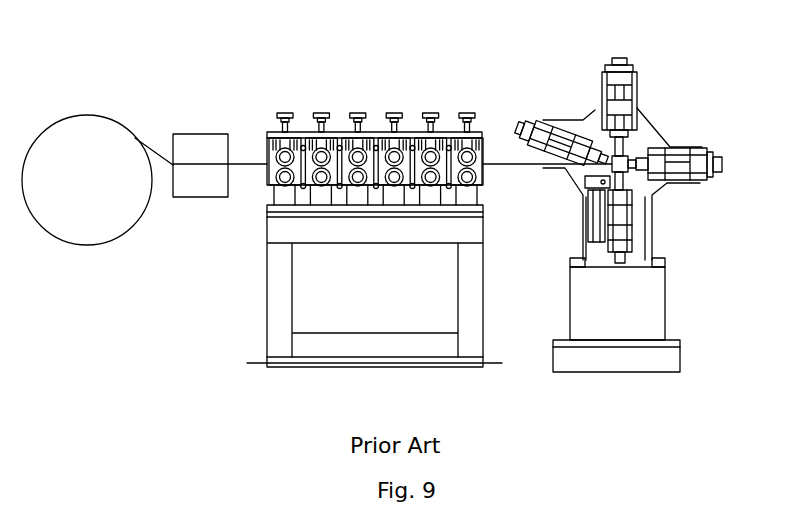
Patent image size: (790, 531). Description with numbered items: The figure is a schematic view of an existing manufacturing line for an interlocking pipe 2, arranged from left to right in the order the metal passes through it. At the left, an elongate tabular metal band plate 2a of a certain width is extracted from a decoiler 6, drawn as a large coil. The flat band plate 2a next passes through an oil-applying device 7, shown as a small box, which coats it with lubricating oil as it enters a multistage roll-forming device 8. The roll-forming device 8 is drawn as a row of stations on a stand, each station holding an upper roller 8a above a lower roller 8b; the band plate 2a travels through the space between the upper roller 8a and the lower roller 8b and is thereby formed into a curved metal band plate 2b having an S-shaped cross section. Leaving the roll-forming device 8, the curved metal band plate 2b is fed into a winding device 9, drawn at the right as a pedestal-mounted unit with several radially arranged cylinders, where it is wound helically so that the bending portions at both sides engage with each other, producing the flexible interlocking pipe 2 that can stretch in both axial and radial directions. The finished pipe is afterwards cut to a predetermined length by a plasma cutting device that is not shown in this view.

The interlocking pipe 2 is at (370, 111).
The tabular metal band plate 2a is at (153, 136).
The curved metal band plate 2b is at (505, 163).
The decoiler 6 is at (88, 243).
The oil-applying device 7 is at (209, 133).
The multistage roll-forming device 8 is at (360, 190).
The upper roller 8a is at (311, 146).
The lower roller 8b is at (310, 172).
The winding device 9 is at (652, 63).